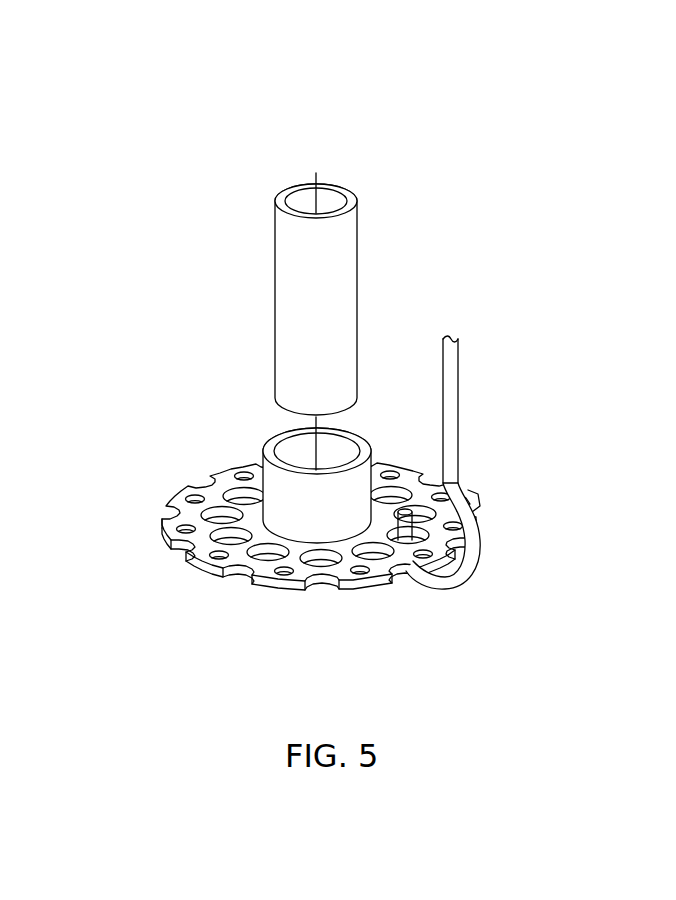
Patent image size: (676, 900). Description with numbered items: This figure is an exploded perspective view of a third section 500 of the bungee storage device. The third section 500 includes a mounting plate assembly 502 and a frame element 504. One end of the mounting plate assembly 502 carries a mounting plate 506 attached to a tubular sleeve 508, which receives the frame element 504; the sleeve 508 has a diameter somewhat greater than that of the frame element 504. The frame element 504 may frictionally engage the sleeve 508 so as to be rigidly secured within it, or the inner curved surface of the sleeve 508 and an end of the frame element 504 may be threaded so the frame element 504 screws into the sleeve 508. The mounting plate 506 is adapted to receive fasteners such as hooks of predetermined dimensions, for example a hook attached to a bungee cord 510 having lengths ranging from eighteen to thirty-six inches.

The third section 500 is at (303, 312).
The mounting plate assembly 502 is at (303, 463).
The frame element 504 is at (276, 289).
The mounting plate 506 is at (205, 472).
The tubular sleeve 508 is at (478, 550).
The bungee cord 510 is at (458, 392).